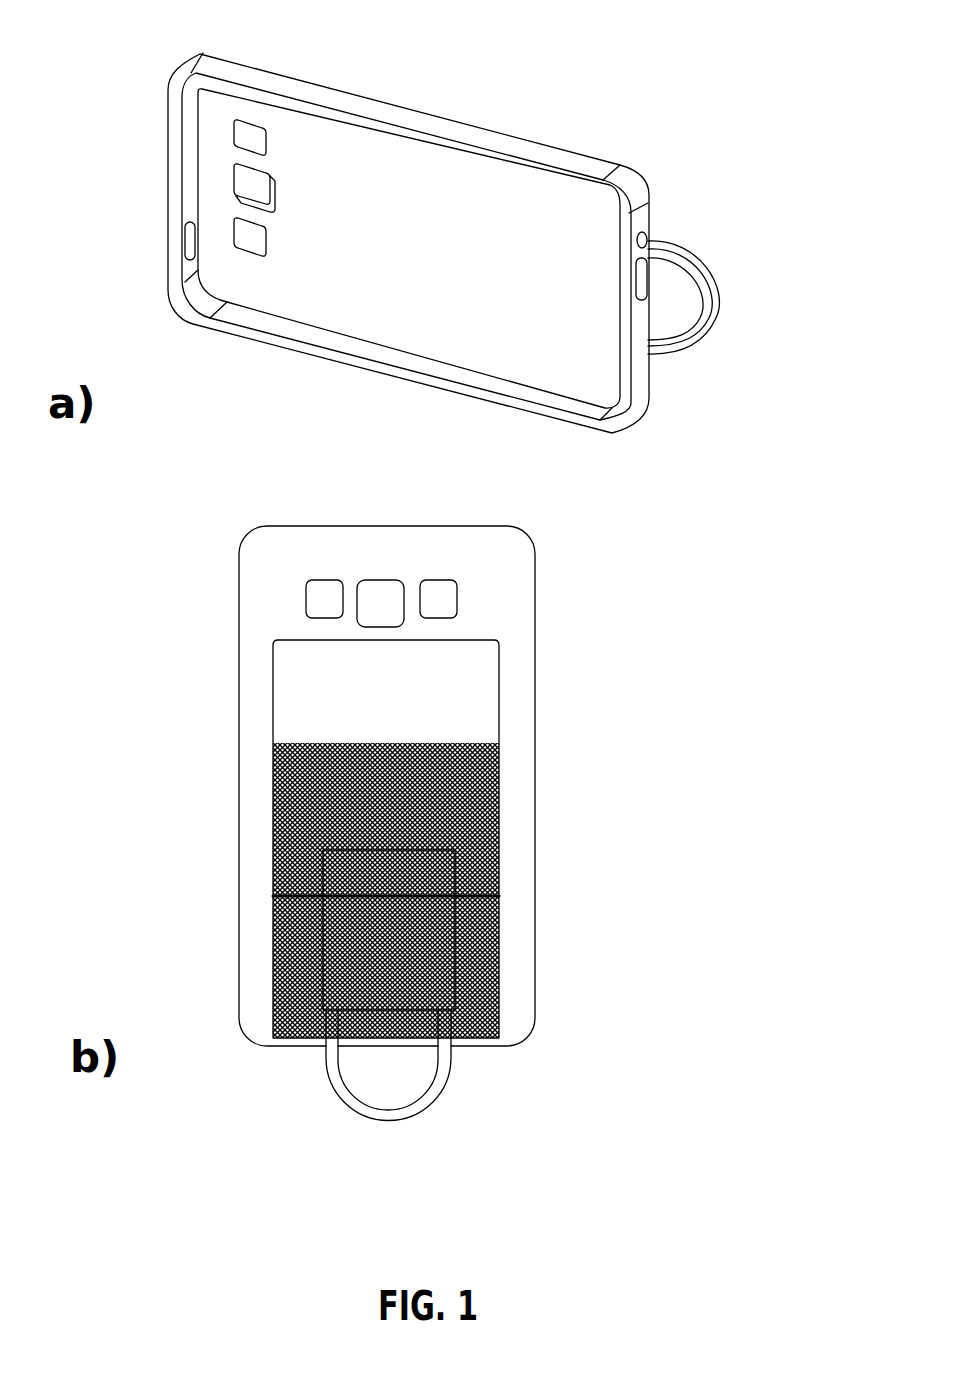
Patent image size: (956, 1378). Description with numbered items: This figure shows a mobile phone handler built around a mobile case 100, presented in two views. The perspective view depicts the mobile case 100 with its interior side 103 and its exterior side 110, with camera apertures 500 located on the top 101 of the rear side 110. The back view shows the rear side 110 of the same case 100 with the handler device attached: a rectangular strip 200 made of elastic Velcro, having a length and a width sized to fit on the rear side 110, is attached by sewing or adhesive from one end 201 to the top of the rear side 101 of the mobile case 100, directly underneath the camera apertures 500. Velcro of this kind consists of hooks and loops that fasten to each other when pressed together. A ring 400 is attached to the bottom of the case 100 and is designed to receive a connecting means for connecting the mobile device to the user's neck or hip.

The mobile case 100 is at (447, 599).
The interior side 103 is at (400, 178).
The camera apertures 500 is at (255, 185).
The ring 400 is at (714, 317).
The exterior side 110 is at (408, 243).
The top of the rear side 101 is at (262, 662).
The end of the first strip 201 is at (480, 697).
The rectangular strip 200 is at (273, 793).